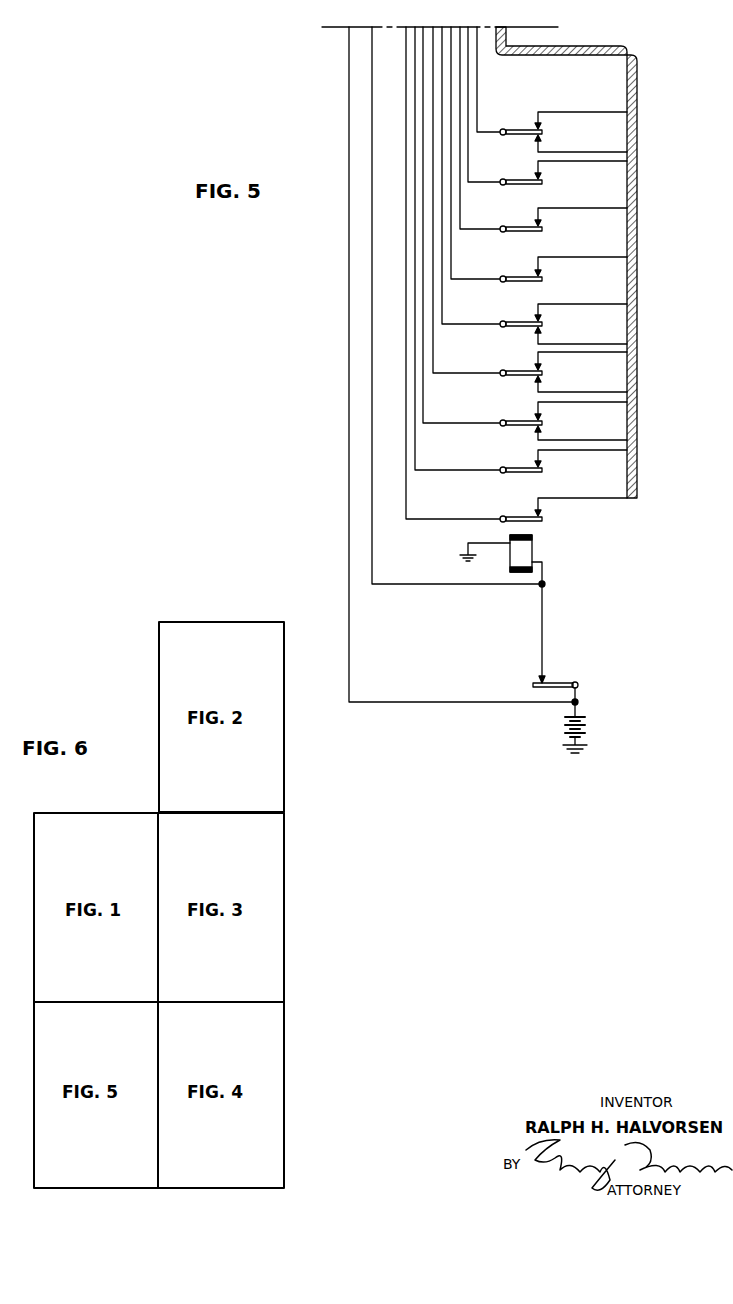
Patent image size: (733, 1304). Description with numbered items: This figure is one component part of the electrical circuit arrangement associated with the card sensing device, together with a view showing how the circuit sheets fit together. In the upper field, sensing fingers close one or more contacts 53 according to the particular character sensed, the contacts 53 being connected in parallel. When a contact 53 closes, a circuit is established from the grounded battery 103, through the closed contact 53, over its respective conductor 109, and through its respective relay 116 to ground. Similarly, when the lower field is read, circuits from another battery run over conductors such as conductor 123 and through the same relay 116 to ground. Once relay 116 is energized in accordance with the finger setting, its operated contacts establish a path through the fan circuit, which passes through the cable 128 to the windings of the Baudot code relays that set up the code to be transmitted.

The cable 128 is at (637, 77).
The conductor 109 is at (349, 292).
The conductor 123 is at (372, 588).
The relay 116 is at (533, 553).
The contact 53 is at (540, 674).
The grounded battery 103 is at (568, 740).